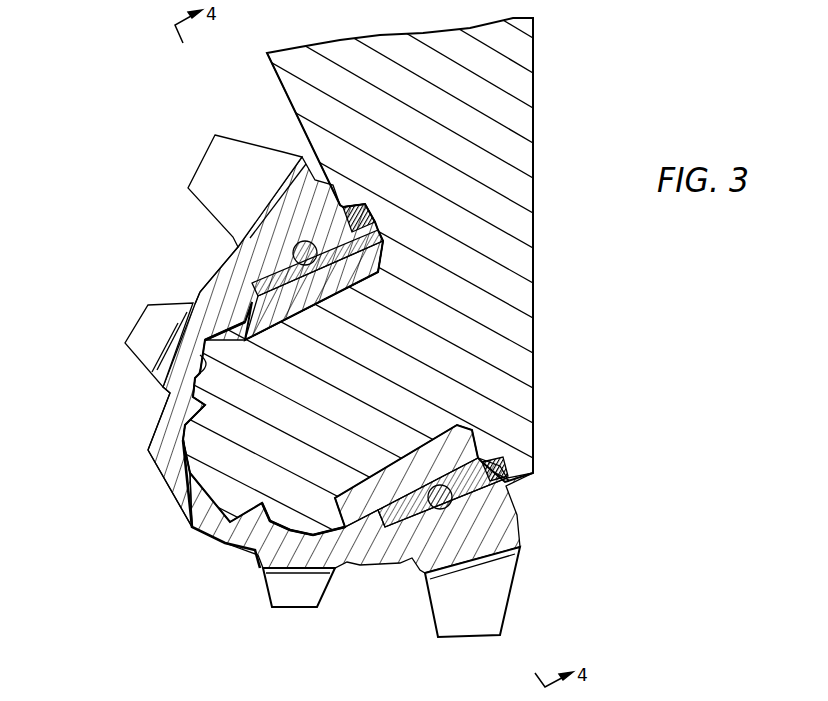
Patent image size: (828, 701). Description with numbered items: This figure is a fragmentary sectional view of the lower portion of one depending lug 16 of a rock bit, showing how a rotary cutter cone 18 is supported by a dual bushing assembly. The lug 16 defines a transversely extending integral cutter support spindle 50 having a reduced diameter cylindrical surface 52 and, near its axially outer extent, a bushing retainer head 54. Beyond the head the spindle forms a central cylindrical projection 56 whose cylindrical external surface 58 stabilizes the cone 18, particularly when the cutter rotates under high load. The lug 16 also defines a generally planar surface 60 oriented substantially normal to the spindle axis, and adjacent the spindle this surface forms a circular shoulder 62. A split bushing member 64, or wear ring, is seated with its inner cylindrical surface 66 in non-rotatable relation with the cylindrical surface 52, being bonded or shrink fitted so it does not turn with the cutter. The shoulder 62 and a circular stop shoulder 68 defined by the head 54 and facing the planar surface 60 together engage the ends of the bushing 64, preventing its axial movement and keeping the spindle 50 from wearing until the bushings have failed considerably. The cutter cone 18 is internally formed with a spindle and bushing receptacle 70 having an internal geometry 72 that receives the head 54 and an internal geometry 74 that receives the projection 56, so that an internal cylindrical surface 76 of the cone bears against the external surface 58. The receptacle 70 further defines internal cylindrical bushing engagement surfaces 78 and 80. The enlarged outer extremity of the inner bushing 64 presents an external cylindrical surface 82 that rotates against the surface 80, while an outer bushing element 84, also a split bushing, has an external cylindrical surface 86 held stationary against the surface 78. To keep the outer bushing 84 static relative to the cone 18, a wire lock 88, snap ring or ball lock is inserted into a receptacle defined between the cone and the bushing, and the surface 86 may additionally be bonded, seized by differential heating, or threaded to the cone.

The depending lug 16 is at (520, 103).
The rotary cutter cone 18 is at (307, 433).
The cutter support spindle 50 is at (260, 503).
The reduced diameter cylindrical surface 52 is at (264, 324).
The bushing retainer head 54 is at (225, 380).
The central cylindrical projection 56 is at (223, 480).
The cylindrical external surface 58 is at (155, 427).
The planar surface 60 is at (272, 63).
The circular shoulder 62 is at (458, 424).
The split bushing member 64 is at (310, 303).
The inner cylindrical surface 66 is at (347, 292).
The circular stop shoulder 68 is at (215, 282).
The spindle and bushing receptacle 70 is at (282, 567).
The internal geometry 72 is at (205, 355).
The internal geometry 74 is at (170, 465).
The internal cylindrical surface 76 is at (212, 513).
The internal cylindrical bushing engagement surface 78 is at (407, 527).
The internal cylindrical bushing engagement surface 80 is at (357, 527).
The external cylindrical surface 82 is at (200, 292).
The outer bushing element 84 is at (237, 252).
The external cylindrical surface 86 is at (345, 206).
The wire lock 88 is at (268, 224).